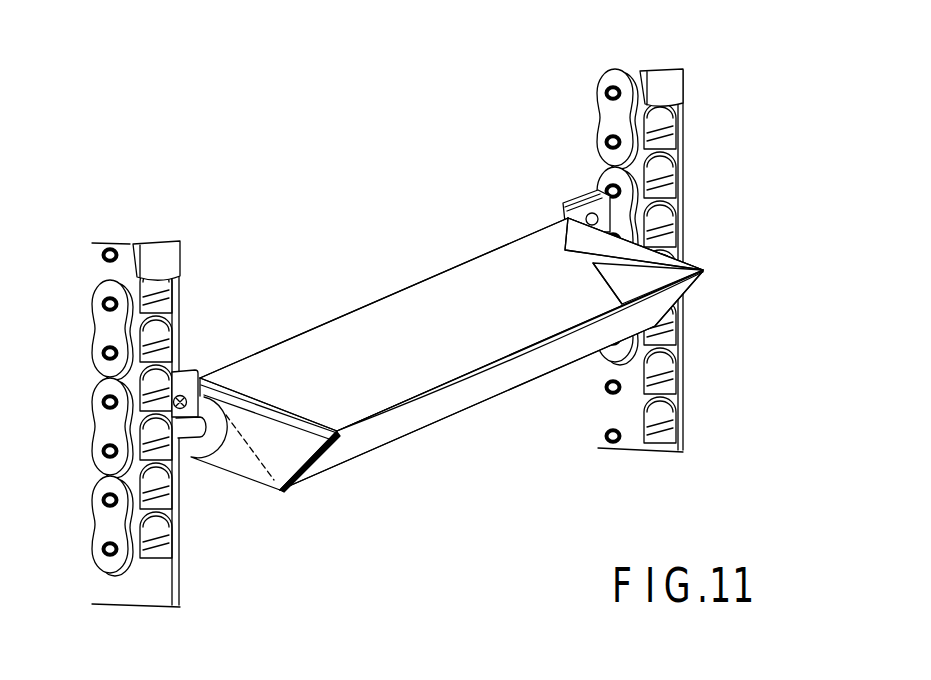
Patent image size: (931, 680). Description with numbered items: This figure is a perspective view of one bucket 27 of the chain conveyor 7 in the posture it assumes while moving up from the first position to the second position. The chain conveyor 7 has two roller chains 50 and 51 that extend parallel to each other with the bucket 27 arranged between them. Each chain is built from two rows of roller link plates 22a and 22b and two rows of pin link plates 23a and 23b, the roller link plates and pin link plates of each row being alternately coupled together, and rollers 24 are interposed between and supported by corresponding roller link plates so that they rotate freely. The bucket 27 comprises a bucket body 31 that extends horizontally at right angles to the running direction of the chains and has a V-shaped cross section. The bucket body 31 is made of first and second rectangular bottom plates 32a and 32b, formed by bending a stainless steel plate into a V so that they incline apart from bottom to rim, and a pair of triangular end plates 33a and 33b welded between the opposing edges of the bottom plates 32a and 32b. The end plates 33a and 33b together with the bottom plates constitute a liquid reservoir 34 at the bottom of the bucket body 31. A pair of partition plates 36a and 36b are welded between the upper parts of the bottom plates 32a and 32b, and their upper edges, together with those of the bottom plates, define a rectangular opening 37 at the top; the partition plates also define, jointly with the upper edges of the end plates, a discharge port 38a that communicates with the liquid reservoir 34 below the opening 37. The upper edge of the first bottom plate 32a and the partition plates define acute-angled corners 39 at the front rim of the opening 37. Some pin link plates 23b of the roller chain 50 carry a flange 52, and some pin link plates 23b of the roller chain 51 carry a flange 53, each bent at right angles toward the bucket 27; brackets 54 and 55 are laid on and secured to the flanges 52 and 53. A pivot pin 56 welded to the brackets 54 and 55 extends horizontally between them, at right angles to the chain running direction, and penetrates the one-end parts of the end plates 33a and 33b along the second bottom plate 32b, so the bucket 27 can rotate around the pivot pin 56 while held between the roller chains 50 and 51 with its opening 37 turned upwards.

The chain conveyor 7 is at (700, 76).
The roller link plate 22a is at (96, 373).
The roller link plate 22b is at (160, 367).
The pin link plate 23a is at (105, 422).
The pin link plate 23b is at (620, 229).
The roller 24 is at (153, 537).
The bucket 27 is at (413, 280).
The bucket body 31 is at (403, 440).
The first bottom plate 32a is at (470, 395).
The second bottom plate 32b is at (387, 320).
The end plate 33a is at (265, 458).
The end plate 33b is at (640, 290).
The liquid reservoir 34 is at (503, 347).
The partition plate 36a is at (290, 418).
The partition plate 36b is at (652, 263).
The opening 37 is at (478, 288).
The discharge port 38a is at (303, 432).
The corner 39 is at (421, 388).
The roller chain 50 is at (150, 250).
The roller chain 51 is at (662, 83).
The flange 52 is at (180, 370).
The flange 53 is at (583, 192).
The bracket 54 is at (188, 440).
The bracket 55 is at (572, 205).
The pivot pin 56 is at (243, 383).